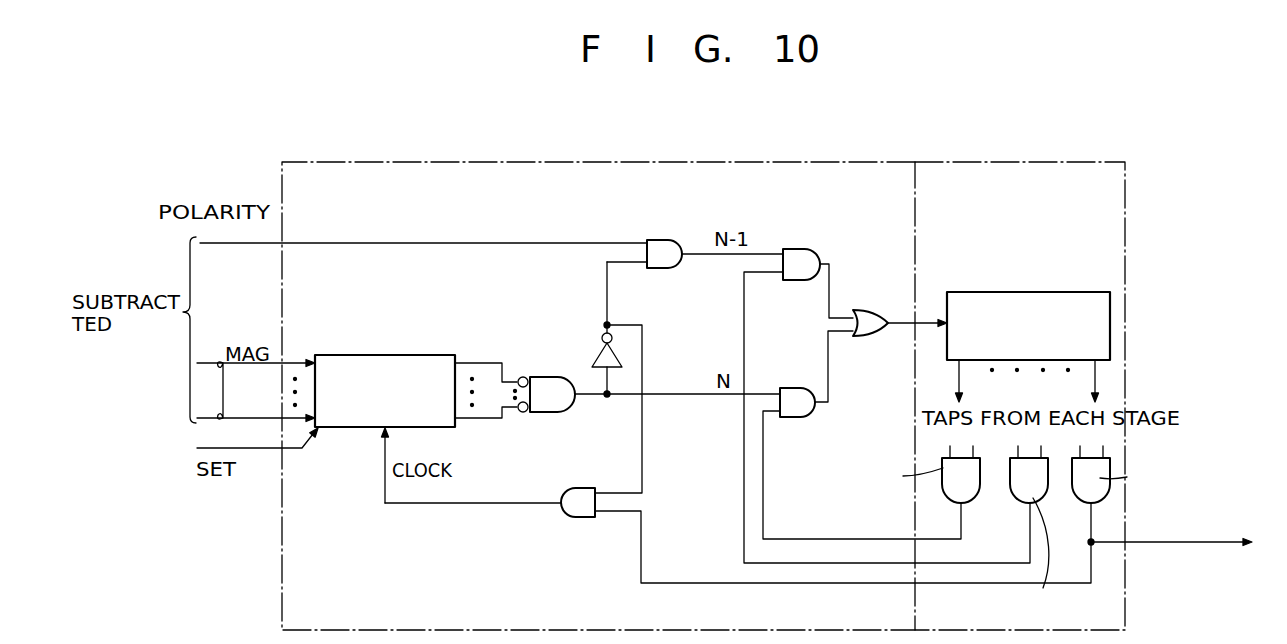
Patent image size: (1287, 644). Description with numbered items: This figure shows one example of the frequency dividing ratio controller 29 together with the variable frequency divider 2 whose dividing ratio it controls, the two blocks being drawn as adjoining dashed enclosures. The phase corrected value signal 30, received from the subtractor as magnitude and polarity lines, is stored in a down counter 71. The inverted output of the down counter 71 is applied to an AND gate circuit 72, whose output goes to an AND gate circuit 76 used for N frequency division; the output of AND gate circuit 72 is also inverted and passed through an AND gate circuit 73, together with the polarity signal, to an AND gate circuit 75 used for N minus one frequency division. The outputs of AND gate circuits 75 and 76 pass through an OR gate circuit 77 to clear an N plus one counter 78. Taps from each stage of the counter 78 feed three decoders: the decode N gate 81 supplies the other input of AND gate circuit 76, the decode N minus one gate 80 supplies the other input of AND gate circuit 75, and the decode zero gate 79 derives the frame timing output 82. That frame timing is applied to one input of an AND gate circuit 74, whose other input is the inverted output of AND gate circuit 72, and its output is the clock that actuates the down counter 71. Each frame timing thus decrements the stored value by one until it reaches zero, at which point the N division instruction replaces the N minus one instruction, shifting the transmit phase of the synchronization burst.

The variable frequency divider 2 is at (1002, 173).
The frequency dividing ratio controller 29 is at (582, 167).
The phase corrected value signal 30 is at (245, 250).
The down counter 71 is at (380, 355).
The AND gate circuit 72 is at (538, 377).
The AND gate circuit 73 is at (668, 240).
The AND gate circuit 74 is at (562, 493).
The AND gate circuit 75 is at (802, 249).
The AND gate circuit 76 is at (805, 417).
The OR gate circuit 77 is at (894, 322).
The (N + 1) counter 78 is at (1062, 292).
The decode 0 gate 79 is at (1073, 490).
The decode N-1 gate 80 is at (1012, 490).
The decode N gate 81 is at (945, 490).
The frame timing output 82 is at (1136, 543).